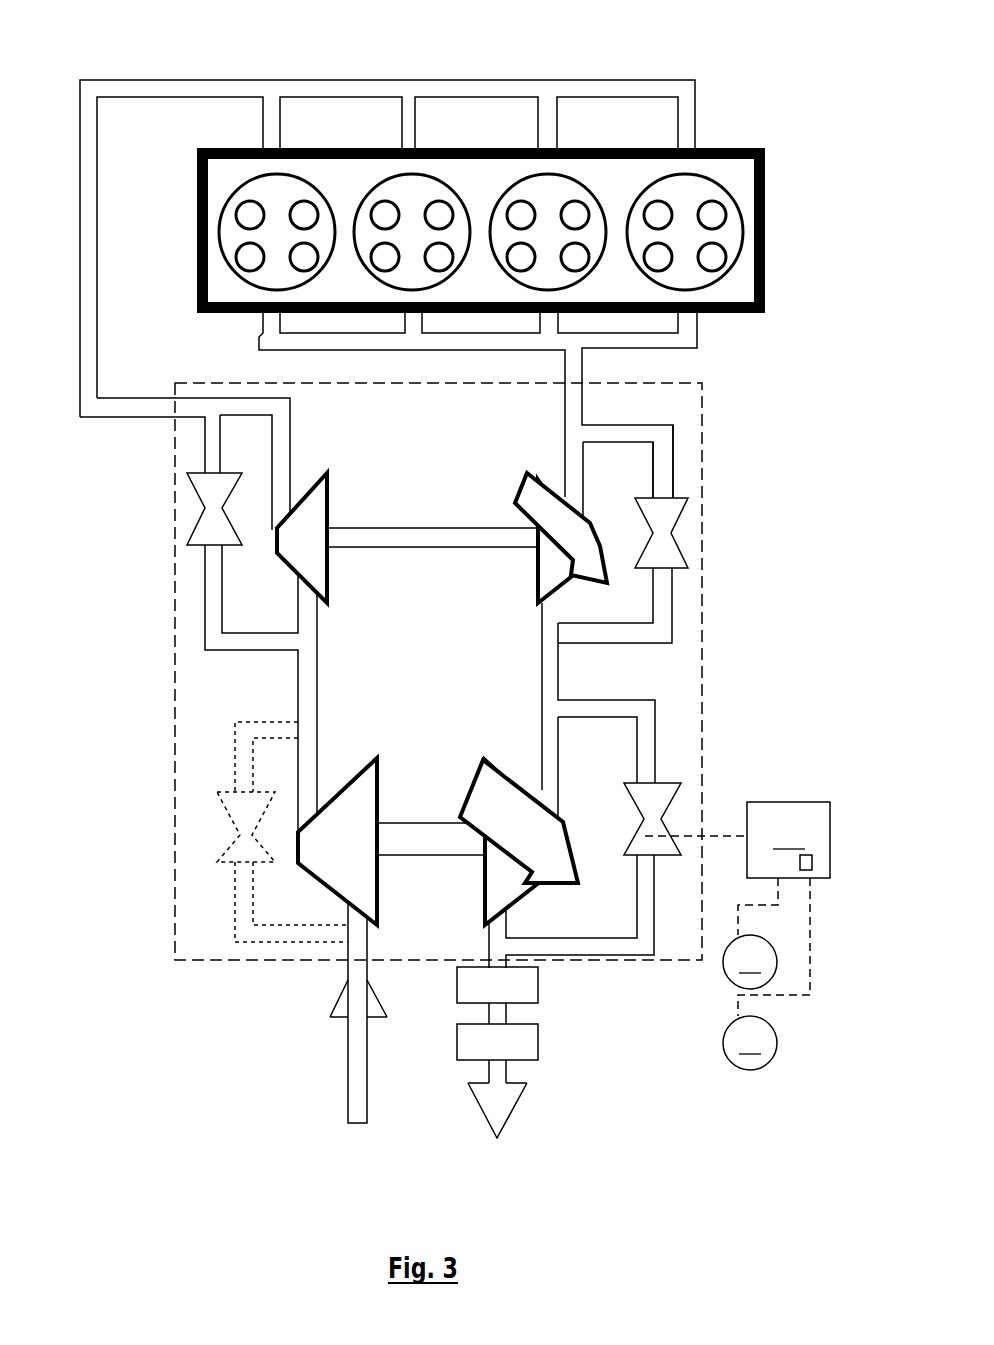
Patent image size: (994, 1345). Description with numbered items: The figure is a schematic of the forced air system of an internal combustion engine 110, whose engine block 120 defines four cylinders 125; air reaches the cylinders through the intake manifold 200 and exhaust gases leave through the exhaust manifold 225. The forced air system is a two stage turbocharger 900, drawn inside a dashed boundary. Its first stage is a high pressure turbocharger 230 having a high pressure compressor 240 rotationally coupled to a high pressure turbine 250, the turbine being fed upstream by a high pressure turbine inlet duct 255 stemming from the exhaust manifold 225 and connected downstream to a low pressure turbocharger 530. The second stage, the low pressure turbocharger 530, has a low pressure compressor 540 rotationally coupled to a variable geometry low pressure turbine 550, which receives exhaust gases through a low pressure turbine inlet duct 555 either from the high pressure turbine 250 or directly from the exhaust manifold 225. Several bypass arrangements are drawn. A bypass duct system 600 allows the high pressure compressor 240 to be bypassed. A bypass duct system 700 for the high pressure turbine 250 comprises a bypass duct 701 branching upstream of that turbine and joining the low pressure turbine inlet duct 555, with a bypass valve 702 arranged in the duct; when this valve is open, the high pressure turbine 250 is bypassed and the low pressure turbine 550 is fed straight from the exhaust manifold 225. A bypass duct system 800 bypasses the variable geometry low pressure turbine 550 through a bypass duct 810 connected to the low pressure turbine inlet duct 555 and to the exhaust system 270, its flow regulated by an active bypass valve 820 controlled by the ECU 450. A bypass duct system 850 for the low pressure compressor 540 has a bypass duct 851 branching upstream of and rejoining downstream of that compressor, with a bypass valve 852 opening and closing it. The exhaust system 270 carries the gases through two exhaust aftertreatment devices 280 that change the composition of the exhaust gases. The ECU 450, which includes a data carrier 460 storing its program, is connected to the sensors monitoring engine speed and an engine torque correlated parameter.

The internal combustion engine 110 is at (145, 59).
The intake manifold 200 is at (408, 97).
The engine block 120 is at (742, 148).
The cylinder 125 is at (745, 212).
The exhaust manifold 225 is at (613, 340).
The high pressure turbine inlet duct 255 is at (568, 415).
The bypass duct system for the high pressure compressor 600 is at (185, 573).
The high pressure compressor 240 is at (318, 505).
The high pressure turbocharger 230 is at (422, 590).
The high pressure turbine 250 is at (528, 490).
The bypass duct 701 is at (663, 445).
The bypass duct system for the high pressure turbine 700 is at (694, 535).
The bypass valve 702 is at (668, 560).
The low pressure turbine inlet duct 555 is at (552, 682).
The two stage turbocharger 900 is at (176, 682).
The low pressure turbocharger 530 is at (423, 783).
The low pressure compressor 540 is at (343, 872).
The variable geometry low pressure turbine 550 is at (508, 783).
The bypass duct system for the low pressure compressor 850 is at (200, 783).
The bypass valve 852 is at (242, 841).
The bypass duct 851 is at (244, 885).
The bypass valve 820 is at (642, 798).
The bypass duct system 800 is at (694, 820).
The bypass duct 810 is at (648, 905).
The ECU 450 is at (776, 936).
The data carrier 460 is at (812, 862).
The exhaust aftertreatment device 280 is at (527, 987).
The exhaust system 270 is at (552, 1084).